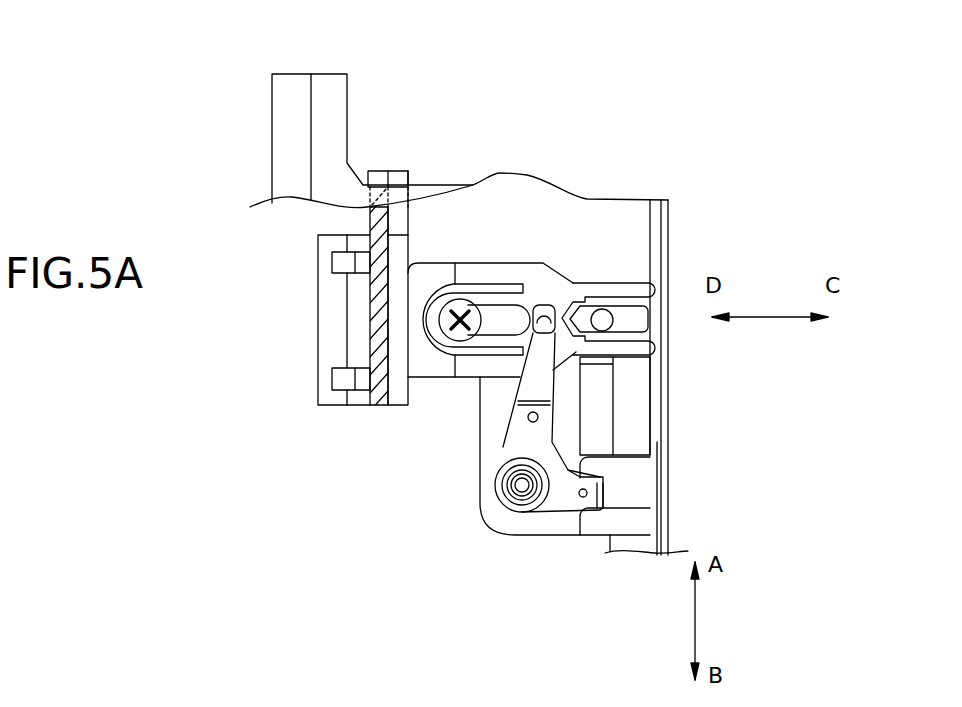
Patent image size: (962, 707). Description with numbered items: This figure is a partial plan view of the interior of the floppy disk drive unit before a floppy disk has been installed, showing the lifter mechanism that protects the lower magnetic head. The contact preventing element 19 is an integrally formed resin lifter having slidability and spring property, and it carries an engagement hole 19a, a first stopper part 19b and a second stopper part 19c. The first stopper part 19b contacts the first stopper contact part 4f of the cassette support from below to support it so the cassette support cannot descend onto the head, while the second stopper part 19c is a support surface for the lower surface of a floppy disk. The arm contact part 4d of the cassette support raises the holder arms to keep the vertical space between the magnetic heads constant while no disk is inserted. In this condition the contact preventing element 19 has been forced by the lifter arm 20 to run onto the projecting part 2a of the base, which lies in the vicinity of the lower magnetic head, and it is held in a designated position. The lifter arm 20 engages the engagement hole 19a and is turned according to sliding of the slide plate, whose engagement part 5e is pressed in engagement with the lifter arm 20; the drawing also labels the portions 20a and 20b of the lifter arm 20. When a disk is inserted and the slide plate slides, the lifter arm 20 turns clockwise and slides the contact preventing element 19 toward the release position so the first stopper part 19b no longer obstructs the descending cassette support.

The arm contact part 4d is at (288, 88).
The first stopper contact part 4f is at (332, 88).
The first stopper part 19b is at (408, 171).
The second stopper part 19c is at (378, 407).
The contact preventing element 19 is at (408, 407).
The projecting part 2a is at (332, 380).
The engaging projection 20b is at (547, 333).
The lifter arm 20 is at (518, 447).
The engagement hole 19a is at (562, 290).
The arm portion 20a is at (640, 490).
The engagement part 5e is at (657, 497).